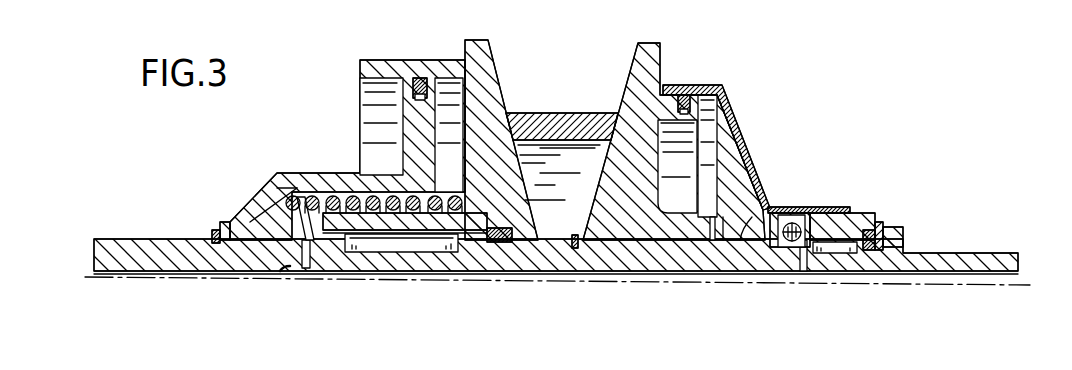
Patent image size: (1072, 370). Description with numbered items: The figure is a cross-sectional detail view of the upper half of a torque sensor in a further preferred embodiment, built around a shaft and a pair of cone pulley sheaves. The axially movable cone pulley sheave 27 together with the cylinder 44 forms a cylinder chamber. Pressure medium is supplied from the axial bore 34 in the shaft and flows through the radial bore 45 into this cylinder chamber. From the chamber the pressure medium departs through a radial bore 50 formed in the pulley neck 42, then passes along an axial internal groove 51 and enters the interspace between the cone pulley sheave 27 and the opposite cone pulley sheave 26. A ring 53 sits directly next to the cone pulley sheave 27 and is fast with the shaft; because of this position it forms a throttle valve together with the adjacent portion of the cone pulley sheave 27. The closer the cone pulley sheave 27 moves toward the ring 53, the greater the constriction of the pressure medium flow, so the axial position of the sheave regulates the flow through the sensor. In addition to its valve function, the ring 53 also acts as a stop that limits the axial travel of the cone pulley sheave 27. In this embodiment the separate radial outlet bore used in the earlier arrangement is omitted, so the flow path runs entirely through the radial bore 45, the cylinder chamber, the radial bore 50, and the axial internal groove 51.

The cone pulley sheave 26 is at (480, 67).
The cone pulley sheave 27 is at (640, 63).
The axial bore 34 is at (953, 282).
The pulley neck 42 is at (773, 206).
The cylinder 44 is at (697, 85).
The radial bore 45 is at (810, 245).
The radial bore 50 is at (717, 233).
The axial internal groove 51 is at (763, 238).
The ring 53 is at (575, 235).